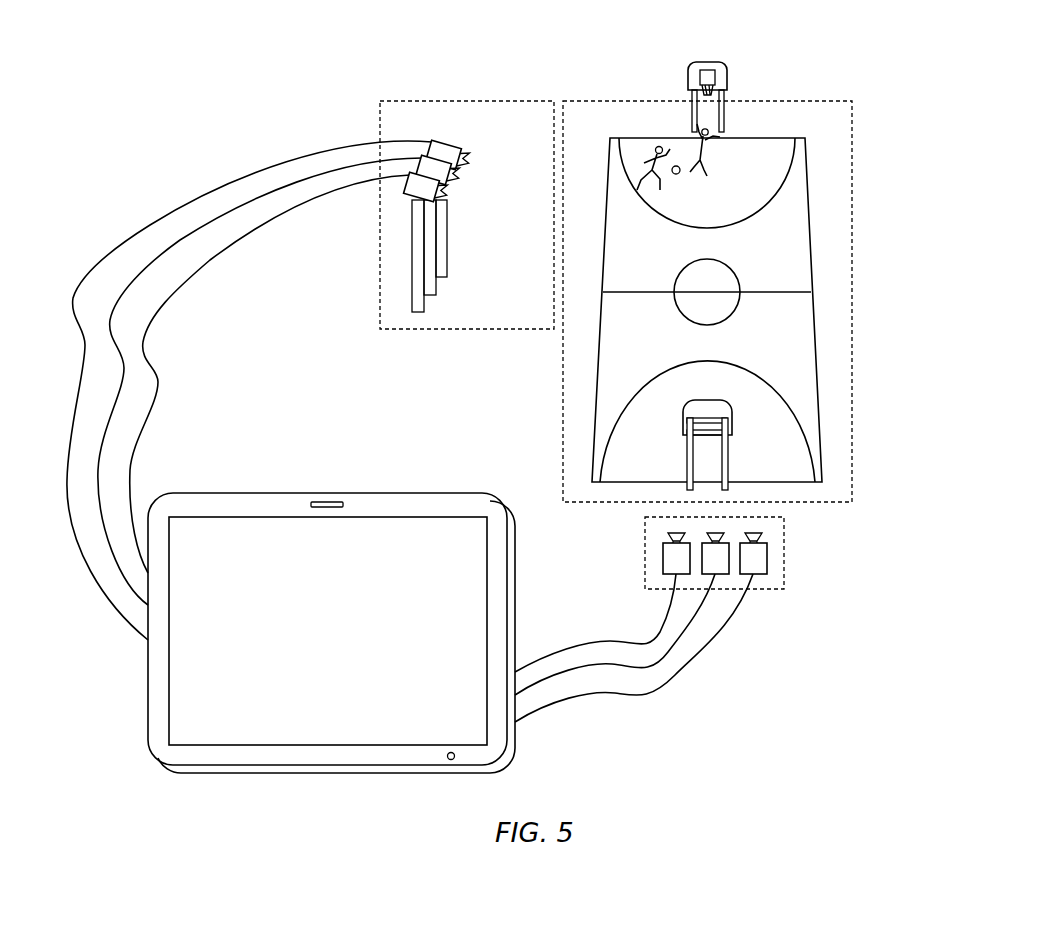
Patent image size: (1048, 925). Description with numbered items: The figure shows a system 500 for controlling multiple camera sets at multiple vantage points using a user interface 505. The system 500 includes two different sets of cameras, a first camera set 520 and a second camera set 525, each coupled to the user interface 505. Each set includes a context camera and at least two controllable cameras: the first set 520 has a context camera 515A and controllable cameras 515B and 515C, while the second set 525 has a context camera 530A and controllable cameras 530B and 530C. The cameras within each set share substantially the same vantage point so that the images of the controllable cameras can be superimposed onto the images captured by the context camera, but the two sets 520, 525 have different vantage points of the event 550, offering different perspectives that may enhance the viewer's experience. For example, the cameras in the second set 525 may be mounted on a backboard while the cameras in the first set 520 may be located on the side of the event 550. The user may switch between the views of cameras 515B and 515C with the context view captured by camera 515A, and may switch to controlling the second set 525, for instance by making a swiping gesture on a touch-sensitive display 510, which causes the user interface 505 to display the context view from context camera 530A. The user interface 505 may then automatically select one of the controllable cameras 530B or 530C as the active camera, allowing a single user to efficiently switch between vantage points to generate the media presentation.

The system 500 is at (946, 108).
The user interface 505 is at (432, 493).
The touch-sensitive display 510 is at (267, 518).
The context camera 515A is at (454, 141).
The controllable camera 515B is at (455, 184).
The controllable camera 515C is at (448, 199).
The camera set 520 is at (466, 101).
The camera set 525 is at (768, 592).
The context camera 530A is at (663, 557).
The controllable camera 530B is at (714, 532).
The controllable camera 530C is at (770, 557).
The event 550 is at (852, 291).